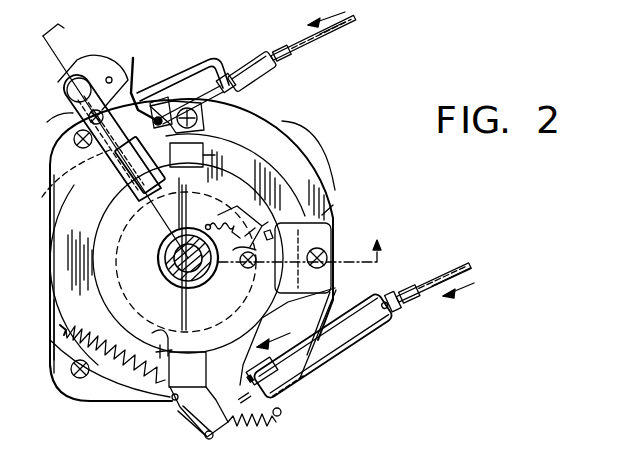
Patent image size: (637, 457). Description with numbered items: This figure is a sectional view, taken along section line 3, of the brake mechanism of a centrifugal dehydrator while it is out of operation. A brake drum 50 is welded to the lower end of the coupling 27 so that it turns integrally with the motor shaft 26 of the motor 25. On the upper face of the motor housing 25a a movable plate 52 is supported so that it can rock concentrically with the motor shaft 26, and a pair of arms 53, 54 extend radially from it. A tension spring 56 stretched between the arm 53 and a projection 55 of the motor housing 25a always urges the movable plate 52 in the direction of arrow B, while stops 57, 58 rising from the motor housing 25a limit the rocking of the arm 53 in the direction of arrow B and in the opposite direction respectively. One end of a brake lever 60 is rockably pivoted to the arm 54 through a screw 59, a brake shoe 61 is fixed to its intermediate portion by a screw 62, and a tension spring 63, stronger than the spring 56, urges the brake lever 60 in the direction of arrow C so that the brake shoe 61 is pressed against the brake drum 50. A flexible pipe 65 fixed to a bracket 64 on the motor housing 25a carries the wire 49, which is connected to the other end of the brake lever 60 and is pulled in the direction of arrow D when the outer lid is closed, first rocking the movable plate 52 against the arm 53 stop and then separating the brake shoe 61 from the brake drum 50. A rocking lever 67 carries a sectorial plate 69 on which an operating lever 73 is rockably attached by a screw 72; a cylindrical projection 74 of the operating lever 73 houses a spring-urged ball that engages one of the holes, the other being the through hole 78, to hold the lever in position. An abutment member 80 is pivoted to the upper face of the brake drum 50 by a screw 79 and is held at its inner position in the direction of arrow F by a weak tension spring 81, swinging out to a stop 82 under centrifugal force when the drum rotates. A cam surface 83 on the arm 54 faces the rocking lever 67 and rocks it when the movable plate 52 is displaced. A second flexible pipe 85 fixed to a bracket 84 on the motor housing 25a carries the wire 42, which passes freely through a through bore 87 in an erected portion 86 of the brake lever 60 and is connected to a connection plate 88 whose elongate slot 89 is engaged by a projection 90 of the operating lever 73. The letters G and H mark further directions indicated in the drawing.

The section line 3- 3 is at (214, 136).
The motor 25 is at (52, 378).
The motor housing 25a is at (53, 300).
The motor shaft 26 is at (195, 261).
The coupling 27 is at (164, 284).
The wire 42 is at (342, 27).
The wire 49 is at (444, 280).
The brake drum 50 is at (262, 182).
The movable plate 52 is at (102, 288).
The arm 53 is at (176, 410).
The arm 54 is at (232, 142).
The projection 55 is at (60, 334).
The tension spring 56 is at (108, 372).
The stop 57 is at (154, 338).
The stop 58 is at (236, 346).
The screw 59 is at (198, 122).
The brake lever 60 is at (326, 170).
The brake shoe 61 is at (330, 252).
The screw 62 is at (333, 272).
The tension spring 63 is at (256, 425).
The bracket 64 is at (352, 350).
The flexible pipe 65 is at (406, 298).
The rocking lever 67 is at (76, 150).
The sectorial plate 69 is at (78, 70).
The screw 72 is at (47, 120).
The operating lever 73 is at (118, 170).
The cylindrical projection 74 is at (66, 92).
The through hole 78 is at (109, 77).
The screw 79 is at (244, 269).
The abutment member 80 is at (262, 215).
The tension spring 81 is at (207, 224).
The stop 82 is at (334, 207).
The cam surface 83 is at (146, 80).
The bracket 84 is at (214, 62).
The flexible pipe 85 is at (262, 58).
The erected portion 86 is at (196, 162).
The through bore 87 is at (185, 80).
The connection plate 88 is at (158, 98).
The elongate slot 89 is at (182, 203).
The projection 90 is at (62, 182).
The arrow B is at (198, 394).
The arrow C is at (278, 335).
The arrow D is at (459, 293).
The arrow F is at (230, 251).
The direction G is at (82, 250).
The direction H is at (326, 13).